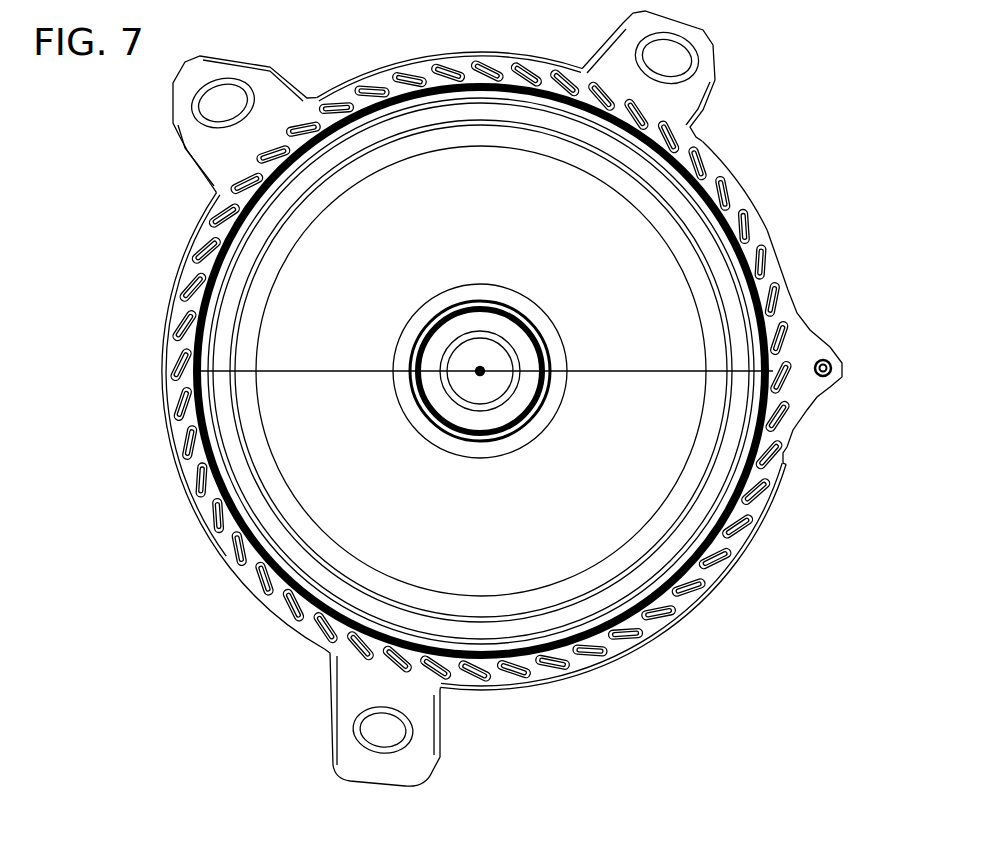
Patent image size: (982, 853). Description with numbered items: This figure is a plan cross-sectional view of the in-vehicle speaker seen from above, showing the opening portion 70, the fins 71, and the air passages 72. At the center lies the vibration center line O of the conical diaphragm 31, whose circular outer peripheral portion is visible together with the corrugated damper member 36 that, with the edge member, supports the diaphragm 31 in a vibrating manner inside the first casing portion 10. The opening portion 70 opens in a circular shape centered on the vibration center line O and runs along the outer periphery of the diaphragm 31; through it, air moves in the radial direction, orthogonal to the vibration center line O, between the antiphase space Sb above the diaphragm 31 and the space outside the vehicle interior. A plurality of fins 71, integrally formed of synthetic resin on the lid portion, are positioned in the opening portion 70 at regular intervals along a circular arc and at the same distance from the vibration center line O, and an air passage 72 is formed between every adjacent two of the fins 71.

The first casing portion 10 is at (797, 297).
The opening portion 70 is at (757, 232).
The fins 71 is at (290, 600).
The air passage 72 is at (192, 465).
The diaphragm 31 is at (617, 523).
The damper member 36 is at (562, 622).
The antiphase space Sb is at (297, 305).
The vibration center line O is at (481, 367).